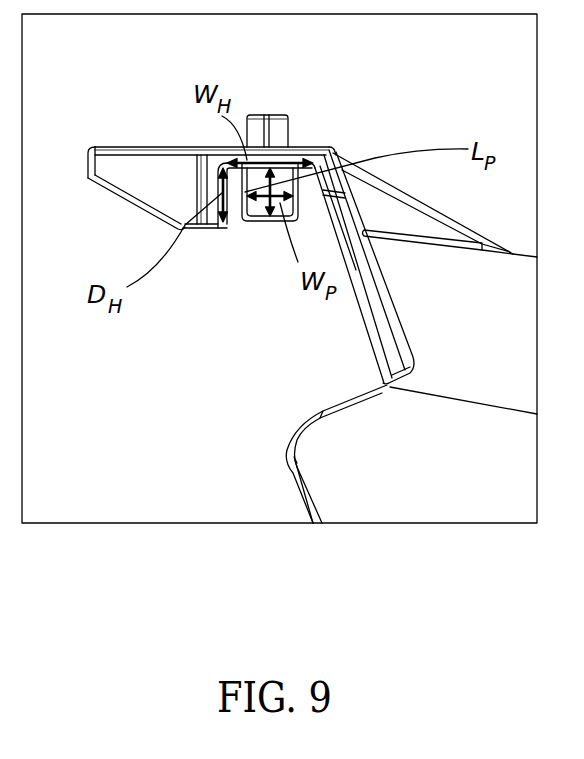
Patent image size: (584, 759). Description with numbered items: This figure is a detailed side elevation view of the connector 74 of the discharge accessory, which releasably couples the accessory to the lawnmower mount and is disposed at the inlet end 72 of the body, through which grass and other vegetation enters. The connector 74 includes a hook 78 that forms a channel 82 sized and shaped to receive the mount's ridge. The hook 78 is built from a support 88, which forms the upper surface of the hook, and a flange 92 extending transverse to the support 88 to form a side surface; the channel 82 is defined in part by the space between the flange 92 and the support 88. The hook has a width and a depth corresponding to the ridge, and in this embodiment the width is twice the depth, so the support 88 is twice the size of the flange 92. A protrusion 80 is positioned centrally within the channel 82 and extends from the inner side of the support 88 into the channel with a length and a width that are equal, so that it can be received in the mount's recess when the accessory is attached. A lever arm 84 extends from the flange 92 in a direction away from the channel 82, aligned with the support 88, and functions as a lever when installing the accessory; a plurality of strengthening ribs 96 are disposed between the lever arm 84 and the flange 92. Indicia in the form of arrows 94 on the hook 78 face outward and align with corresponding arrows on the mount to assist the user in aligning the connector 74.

The inlet end 72 is at (222, 430).
The connector 74 is at (306, 78).
The hook 78 is at (203, 131).
The protrusion 80 is at (241, 222).
The channel 82 is at (261, 251).
The lever arm 84 is at (110, 147).
The support 88 is at (317, 145).
The flange 92 is at (207, 220).
The arrows 94 is at (267, 115).
The strengthening ribs 96 is at (117, 173).